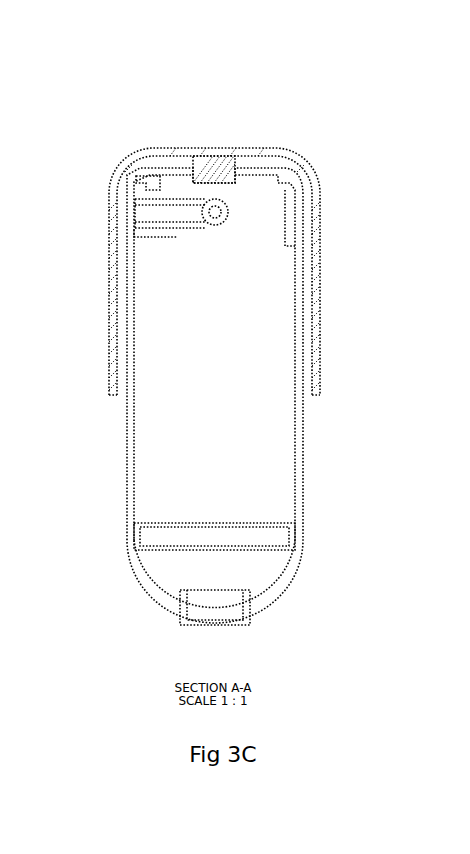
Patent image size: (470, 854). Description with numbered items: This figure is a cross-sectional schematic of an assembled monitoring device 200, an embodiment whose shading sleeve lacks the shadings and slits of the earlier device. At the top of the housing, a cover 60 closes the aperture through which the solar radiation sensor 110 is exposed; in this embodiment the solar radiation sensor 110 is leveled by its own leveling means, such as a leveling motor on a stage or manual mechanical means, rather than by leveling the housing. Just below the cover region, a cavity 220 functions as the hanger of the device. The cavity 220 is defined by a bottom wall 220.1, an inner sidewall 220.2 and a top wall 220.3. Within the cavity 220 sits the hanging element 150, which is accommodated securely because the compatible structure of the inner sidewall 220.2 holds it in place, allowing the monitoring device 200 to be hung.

The cover 60 is at (200, 150).
The solar radiation sensor 110 is at (224, 163).
The hanging element 150 is at (226, 208).
The monitoring device 200 is at (354, 403).
The cavity 220 is at (145, 213).
The bottom wall 220.1 is at (153, 233).
The inner sidewall 220.2 is at (224, 222).
The top wall 220.3 is at (152, 184).